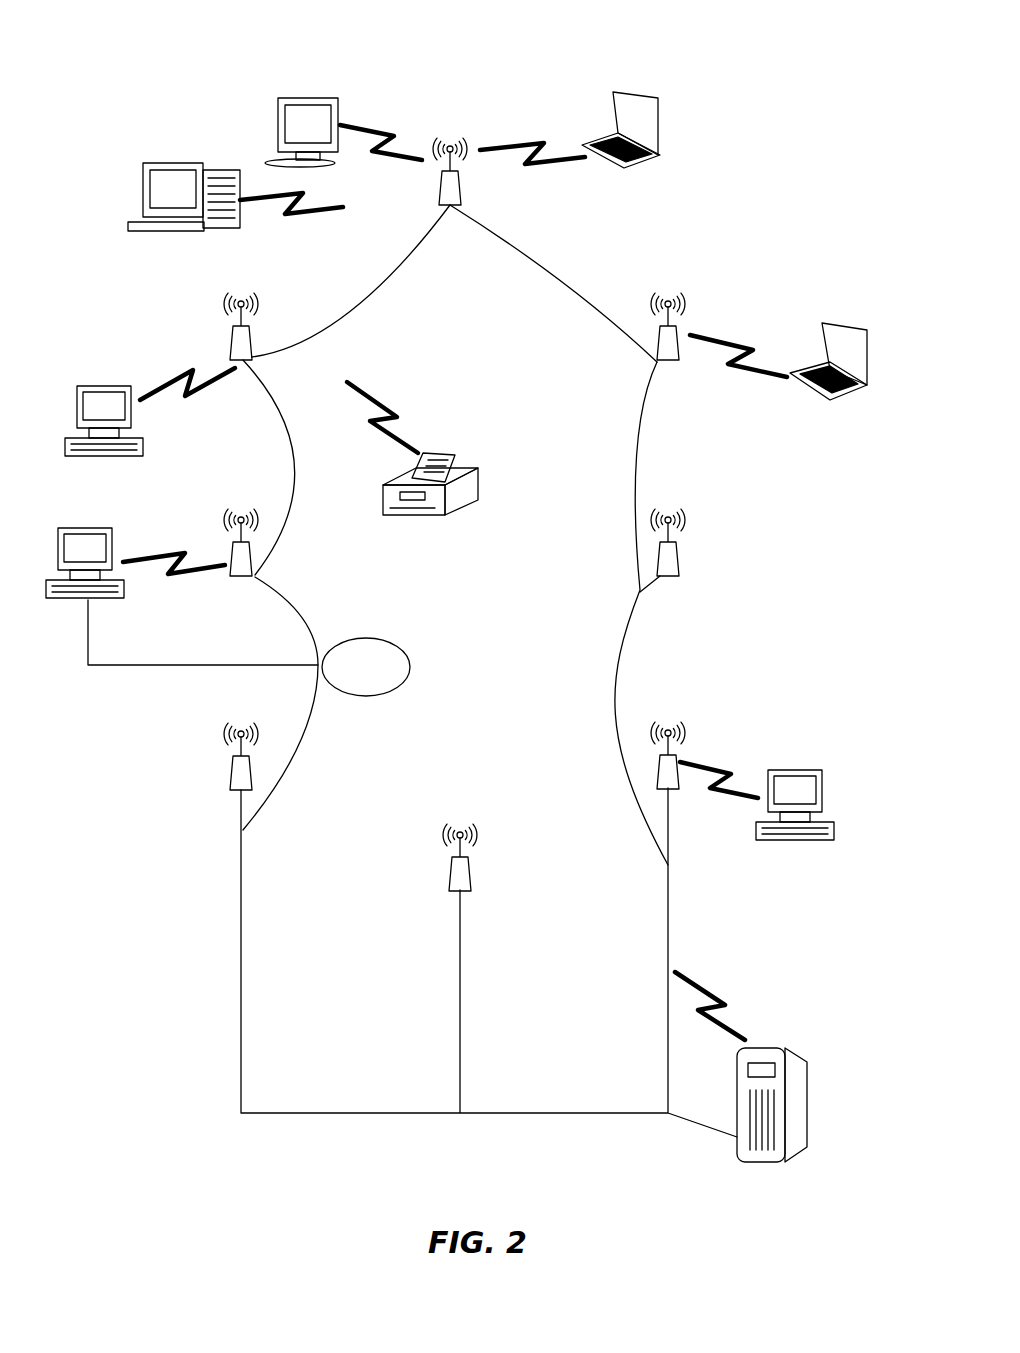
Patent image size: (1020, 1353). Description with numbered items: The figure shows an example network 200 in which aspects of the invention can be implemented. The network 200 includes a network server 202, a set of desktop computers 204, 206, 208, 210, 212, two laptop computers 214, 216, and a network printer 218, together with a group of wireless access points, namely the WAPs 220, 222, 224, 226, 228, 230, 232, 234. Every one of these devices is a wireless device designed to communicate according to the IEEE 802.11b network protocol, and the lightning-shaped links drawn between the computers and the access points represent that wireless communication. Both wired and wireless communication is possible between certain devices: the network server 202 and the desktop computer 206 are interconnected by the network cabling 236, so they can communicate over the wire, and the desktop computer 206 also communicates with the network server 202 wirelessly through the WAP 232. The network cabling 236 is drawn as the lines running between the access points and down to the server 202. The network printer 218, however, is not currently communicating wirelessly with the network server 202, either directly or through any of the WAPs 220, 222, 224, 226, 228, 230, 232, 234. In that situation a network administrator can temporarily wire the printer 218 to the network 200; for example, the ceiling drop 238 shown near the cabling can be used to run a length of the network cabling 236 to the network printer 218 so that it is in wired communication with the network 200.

The network 200 is at (202, 98).
The network server 202 is at (810, 1105).
The desktop computer 204 is at (795, 770).
The desktop computer 206 is at (90, 528).
The desktop computer 208 is at (105, 387).
The desktop computer 210 is at (172, 162).
The desktop computer 212 is at (310, 98).
The laptop computer 214 is at (640, 92).
The laptop computer 216 is at (845, 323).
The network printer 218 is at (478, 482).
The WAP 220 is at (478, 872).
The WAP 222 is at (680, 790).
The WAP 224 is at (680, 556).
The WAP 226 is at (682, 330).
The WAP 228 is at (462, 183).
The WAP 230 is at (255, 340).
The WAP 232 is at (230, 556).
The WAP 234 is at (228, 772).
The network cabling 236 is at (563, 288).
The ceiling drop 238 is at (372, 638).